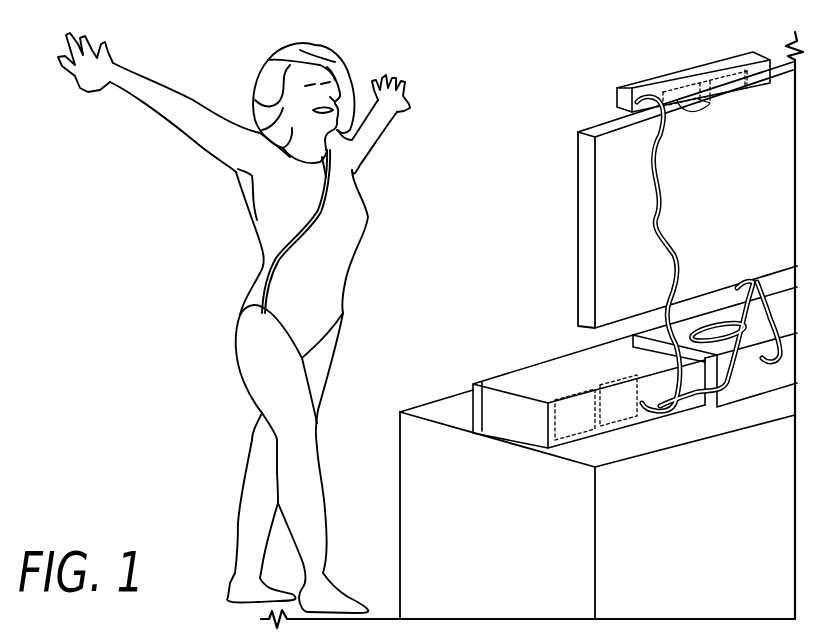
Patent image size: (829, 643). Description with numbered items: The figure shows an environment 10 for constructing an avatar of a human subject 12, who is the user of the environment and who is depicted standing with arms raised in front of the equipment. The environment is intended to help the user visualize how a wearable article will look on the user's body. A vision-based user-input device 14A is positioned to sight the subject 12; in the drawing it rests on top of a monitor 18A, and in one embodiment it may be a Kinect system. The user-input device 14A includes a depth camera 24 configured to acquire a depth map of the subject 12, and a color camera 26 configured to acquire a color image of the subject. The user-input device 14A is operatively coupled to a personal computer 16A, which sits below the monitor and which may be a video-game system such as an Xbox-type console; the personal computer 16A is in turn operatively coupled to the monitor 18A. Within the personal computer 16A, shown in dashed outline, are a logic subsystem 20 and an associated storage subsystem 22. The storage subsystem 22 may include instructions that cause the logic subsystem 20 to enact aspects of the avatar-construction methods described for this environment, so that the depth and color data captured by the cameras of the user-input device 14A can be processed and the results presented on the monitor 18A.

The environment 10 is at (505, 259).
The human subject 12 is at (220, 239).
The user-input device 14A is at (622, 108).
The personal computer 16A is at (589, 404).
The monitor 18A is at (687, 195).
The logic subsystem 20 is at (575, 414).
The storage subsystem 22 is at (618, 400).
The depth camera 24 is at (672, 87).
The color camera 26 is at (732, 80).